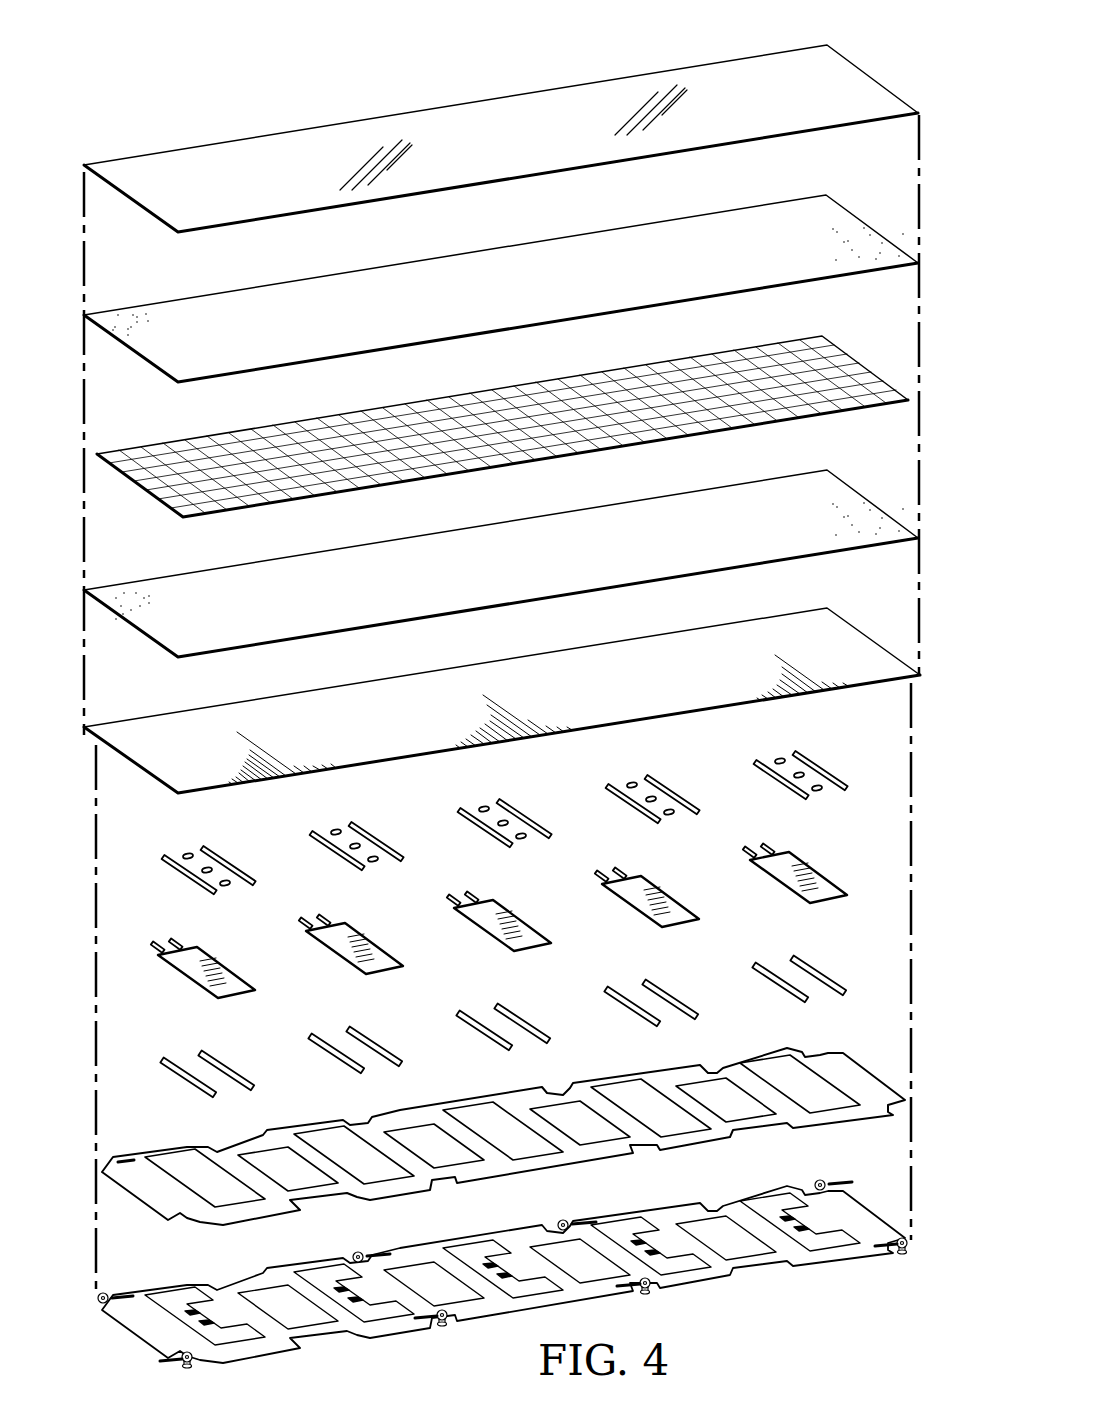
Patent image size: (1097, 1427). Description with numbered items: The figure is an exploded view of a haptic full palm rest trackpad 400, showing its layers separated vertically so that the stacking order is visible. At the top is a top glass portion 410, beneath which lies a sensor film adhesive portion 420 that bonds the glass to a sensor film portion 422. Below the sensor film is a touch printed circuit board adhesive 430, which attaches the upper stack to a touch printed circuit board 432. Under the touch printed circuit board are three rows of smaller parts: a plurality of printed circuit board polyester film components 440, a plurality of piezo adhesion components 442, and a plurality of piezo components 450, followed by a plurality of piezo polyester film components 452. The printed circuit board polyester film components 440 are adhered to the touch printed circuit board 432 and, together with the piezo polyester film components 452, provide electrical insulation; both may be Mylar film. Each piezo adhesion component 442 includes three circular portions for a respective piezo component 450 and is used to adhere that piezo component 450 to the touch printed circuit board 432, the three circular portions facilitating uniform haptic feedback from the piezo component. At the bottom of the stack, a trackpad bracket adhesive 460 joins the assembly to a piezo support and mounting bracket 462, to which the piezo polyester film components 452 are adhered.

The haptic full palm rest trackpad 400 is at (331, 60).
The top glass portion 410 is at (893, 52).
The sensor film adhesive portion 420 is at (855, 213).
The sensor film portion 422 is at (858, 360).
The touch printed circuit board adhesive 430 is at (858, 495).
The touch printed circuit board 432 is at (858, 633).
The printed circuit board polyester film components 440 is at (817, 763).
The piezo adhesion components 442 is at (820, 790).
The piezo components 450 is at (196, 988).
The piezo polyester film components 452 is at (766, 948).
The trackpad bracket adhesive 460 is at (853, 1063).
The piezo support and mounting bracket 462 is at (850, 1258).